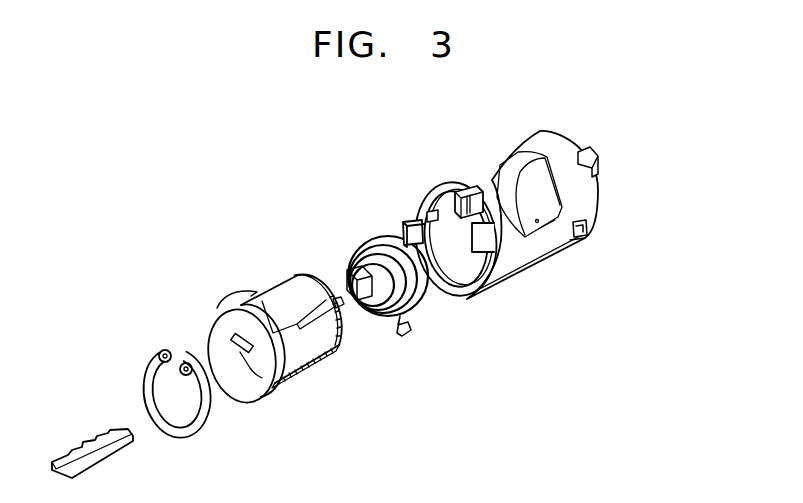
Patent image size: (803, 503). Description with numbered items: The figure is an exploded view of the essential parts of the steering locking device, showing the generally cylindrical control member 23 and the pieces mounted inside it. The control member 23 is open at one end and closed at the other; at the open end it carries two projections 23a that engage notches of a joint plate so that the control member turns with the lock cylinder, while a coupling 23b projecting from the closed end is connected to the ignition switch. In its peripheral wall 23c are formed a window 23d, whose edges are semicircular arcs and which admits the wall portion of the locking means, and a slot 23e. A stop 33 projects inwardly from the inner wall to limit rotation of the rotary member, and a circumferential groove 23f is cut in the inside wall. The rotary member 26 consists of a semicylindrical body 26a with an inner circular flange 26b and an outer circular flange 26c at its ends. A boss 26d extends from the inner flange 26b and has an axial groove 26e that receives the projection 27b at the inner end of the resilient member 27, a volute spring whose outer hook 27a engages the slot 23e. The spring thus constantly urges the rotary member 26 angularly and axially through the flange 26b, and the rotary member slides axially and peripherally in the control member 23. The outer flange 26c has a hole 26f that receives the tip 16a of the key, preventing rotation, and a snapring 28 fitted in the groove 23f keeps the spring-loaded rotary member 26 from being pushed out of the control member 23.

The key 16a is at (115, 458).
The snapring 28 is at (182, 437).
The rotary member 26 is at (296, 353).
The semicylindrical body 26a is at (320, 364).
The inner circular flange 26b is at (298, 276).
The outer circular flange 26c is at (231, 396).
The boss 26d is at (340, 311).
The groove 26e is at (338, 302).
The hole 26f is at (254, 400).
The resilient member 27 is at (390, 301).
The hook 27a is at (418, 312).
The projection 27b is at (348, 267).
The control member 23 is at (575, 201).
The projections 23a is at (405, 228).
The coupling 23b is at (598, 177).
The peripheral wall 23c is at (538, 254).
The window 23d is at (575, 237).
The slot 23e is at (587, 236).
The groove 23f is at (430, 216).
The stop 33 is at (467, 188).